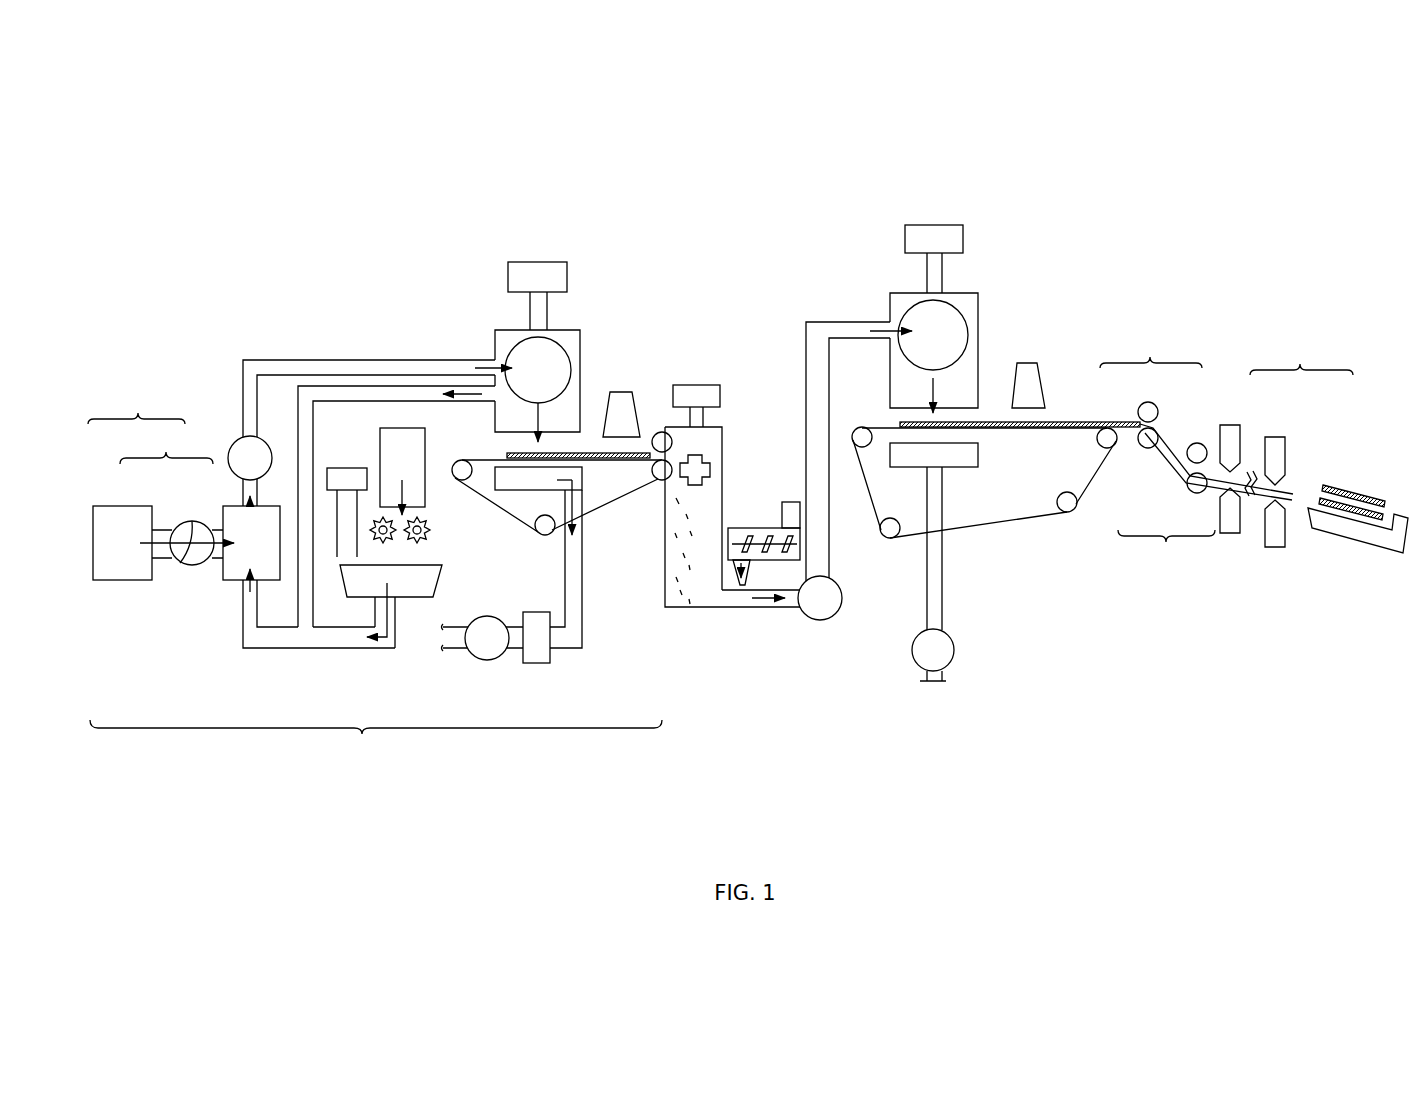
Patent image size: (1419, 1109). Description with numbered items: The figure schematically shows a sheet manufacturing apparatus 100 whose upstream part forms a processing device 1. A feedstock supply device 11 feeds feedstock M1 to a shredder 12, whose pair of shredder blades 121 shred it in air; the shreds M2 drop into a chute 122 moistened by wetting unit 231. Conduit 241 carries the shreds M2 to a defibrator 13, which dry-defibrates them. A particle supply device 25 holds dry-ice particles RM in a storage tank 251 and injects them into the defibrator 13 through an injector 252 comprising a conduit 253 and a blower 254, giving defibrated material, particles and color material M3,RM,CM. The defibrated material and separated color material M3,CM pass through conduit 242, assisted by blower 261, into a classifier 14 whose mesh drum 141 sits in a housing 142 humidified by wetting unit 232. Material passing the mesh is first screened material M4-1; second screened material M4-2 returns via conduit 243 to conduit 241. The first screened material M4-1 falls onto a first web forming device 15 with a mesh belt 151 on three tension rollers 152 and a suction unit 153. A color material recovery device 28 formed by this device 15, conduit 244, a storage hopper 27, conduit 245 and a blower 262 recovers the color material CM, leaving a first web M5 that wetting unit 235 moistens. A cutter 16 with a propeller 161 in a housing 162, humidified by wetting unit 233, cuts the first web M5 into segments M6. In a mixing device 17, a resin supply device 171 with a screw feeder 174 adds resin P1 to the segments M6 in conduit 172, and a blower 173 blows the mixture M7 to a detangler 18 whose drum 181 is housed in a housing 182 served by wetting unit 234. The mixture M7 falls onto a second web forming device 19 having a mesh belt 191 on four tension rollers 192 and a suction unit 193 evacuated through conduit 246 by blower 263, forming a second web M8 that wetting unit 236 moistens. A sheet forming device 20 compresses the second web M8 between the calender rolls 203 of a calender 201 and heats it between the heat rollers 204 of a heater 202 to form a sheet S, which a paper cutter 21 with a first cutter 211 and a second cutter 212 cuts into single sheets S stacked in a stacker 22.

The processing device 1 is at (376, 740).
The sheet manufacturing apparatus 100 is at (1178, 201).
The feedstock supply device 11 is at (400, 428).
The shredder 12 is at (445, 527).
The shredder blades 121 is at (395, 544).
The chute 122 is at (432, 583).
The defibrator 13 is at (222, 584).
The classifier 14 is at (607, 320).
The drum 141 is at (572, 352).
The housing 142 is at (573, 330).
The first web forming device 15 is at (592, 535).
The mesh belt 151 is at (607, 510).
The tension rollers 152 is at (462, 460).
The suction unit 153 is at (583, 470).
The cutter 16 is at (722, 432).
The propeller 161 is at (710, 460).
The housing 162 is at (672, 625).
The mixing device 17 is at (800, 633).
The resin supply device 171 is at (770, 528).
The conduit 172 is at (843, 580).
The blower 173 is at (836, 615).
The screw feeder 174 is at (750, 540).
The detangler 18 is at (1005, 288).
The drum 181 is at (968, 322).
The housing 182 is at (968, 293).
The second web forming device 19 is at (1040, 532).
The mesh belt 191 is at (990, 530).
The tension rollers 192 is at (862, 427).
The suction unit 193 is at (978, 455).
The sheet forming device 20 is at (1203, 395).
The calender 201 is at (1151, 350).
The heater 202 is at (1166, 551).
The calender rolls 203 is at (1140, 405).
The heat rollers 204 is at (1190, 462).
The paper cutter 21 is at (1301, 356).
The first cutter 211 is at (1244, 418).
The second cutter 212 is at (1292, 428).
The stacker 22 is at (1373, 535).
The particle supply device 25 is at (136, 406).
The storage tank 251 is at (107, 505).
The injector 252 is at (166, 442).
The conduit 253 is at (162, 528).
The blower 254 is at (192, 521).
The storage hopper 27 is at (540, 664).
The color material recovery device 28 is at (596, 675).
The wetting unit 231 is at (342, 468).
The wetting unit 232 is at (543, 262).
The wetting unit 233 is at (697, 385).
The wetting unit 234 is at (942, 225).
The wetting unit 235 is at (626, 392).
The wetting unit 236 is at (1030, 363).
The conduit 241 is at (353, 650).
The conduit 242 is at (293, 358).
The conduit 243 is at (363, 384).
The conduit 244 is at (583, 608).
The conduit 245 is at (512, 650).
The conduit 246 is at (943, 608).
The blower 261 is at (238, 443).
The blower 262 is at (480, 660).
The blower 263 is at (955, 652).
The feedstock M1 is at (402, 494).
The shreds M2 is at (246, 595).
The defibrated material and color material M3,CM is at (488, 360).
The defibrated material, particles and color material M3,RM,CM is at (250, 512).
The first screened material M4-1 is at (535, 421).
The second screened material M4-2 is at (455, 393).
The first web M5 is at (655, 436).
The segments M6 is at (690, 515).
The mixture M7 is at (770, 607).
The second web M8 is at (1000, 420).
The particles RM is at (183, 563).
The color material CM is at (570, 500).
The resin P1 is at (750, 572).
The sheet S is at (1215, 447).